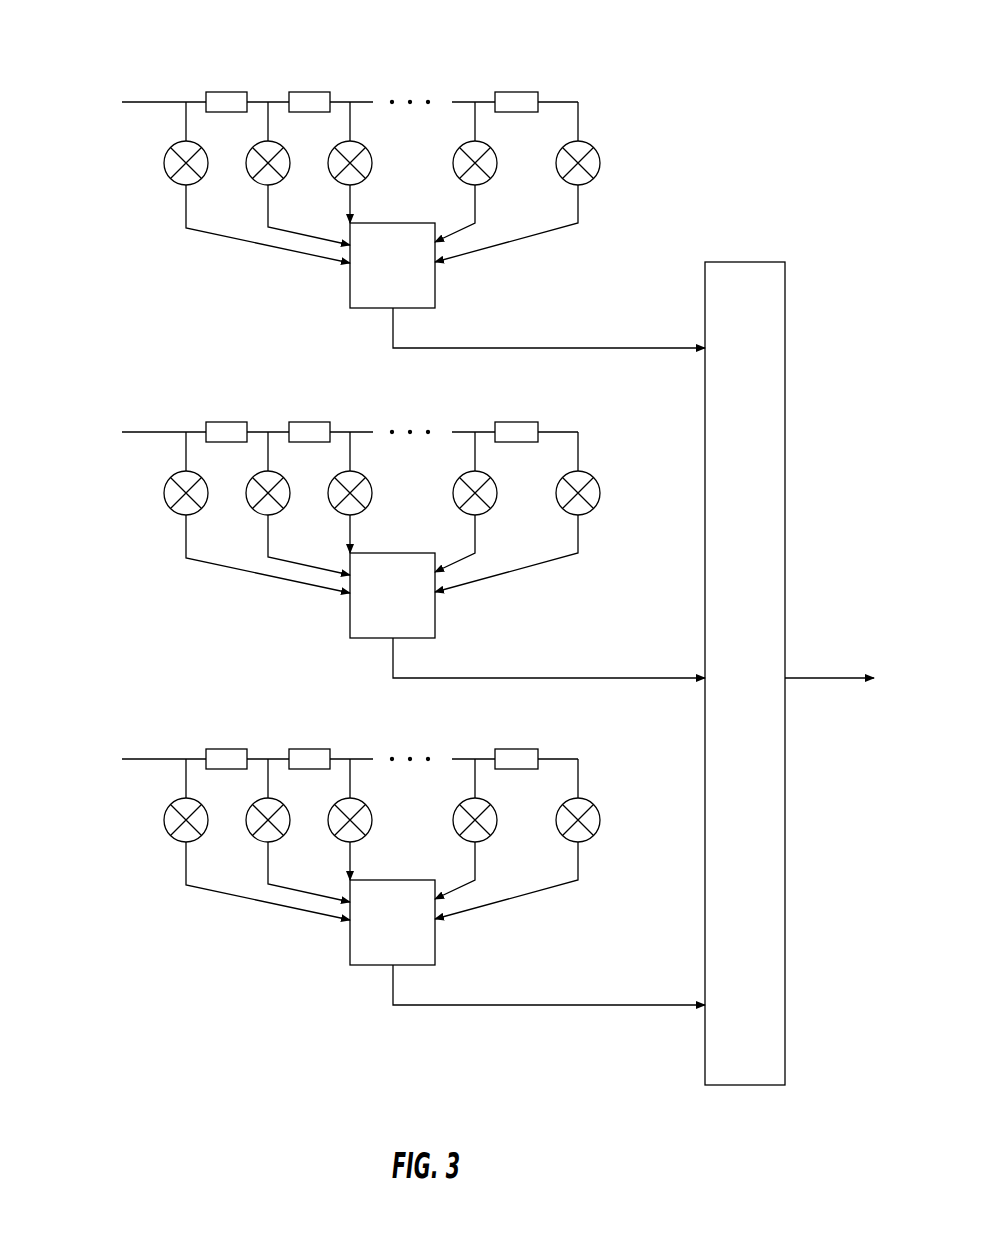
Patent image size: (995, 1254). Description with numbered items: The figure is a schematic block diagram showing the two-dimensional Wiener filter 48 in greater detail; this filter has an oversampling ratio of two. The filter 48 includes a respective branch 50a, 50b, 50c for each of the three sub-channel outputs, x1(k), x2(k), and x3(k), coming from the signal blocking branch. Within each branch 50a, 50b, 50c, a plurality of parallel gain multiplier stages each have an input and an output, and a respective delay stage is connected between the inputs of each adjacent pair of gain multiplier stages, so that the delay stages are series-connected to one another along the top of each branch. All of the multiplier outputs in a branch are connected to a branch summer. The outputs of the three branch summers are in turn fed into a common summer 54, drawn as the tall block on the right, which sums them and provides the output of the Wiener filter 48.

The Wiener filter 48 is at (753, 135).
The branch 50a is at (128, 163).
The branch 50b is at (368, 513).
The branch 50c is at (369, 840).
The summer 54 is at (785, 327).